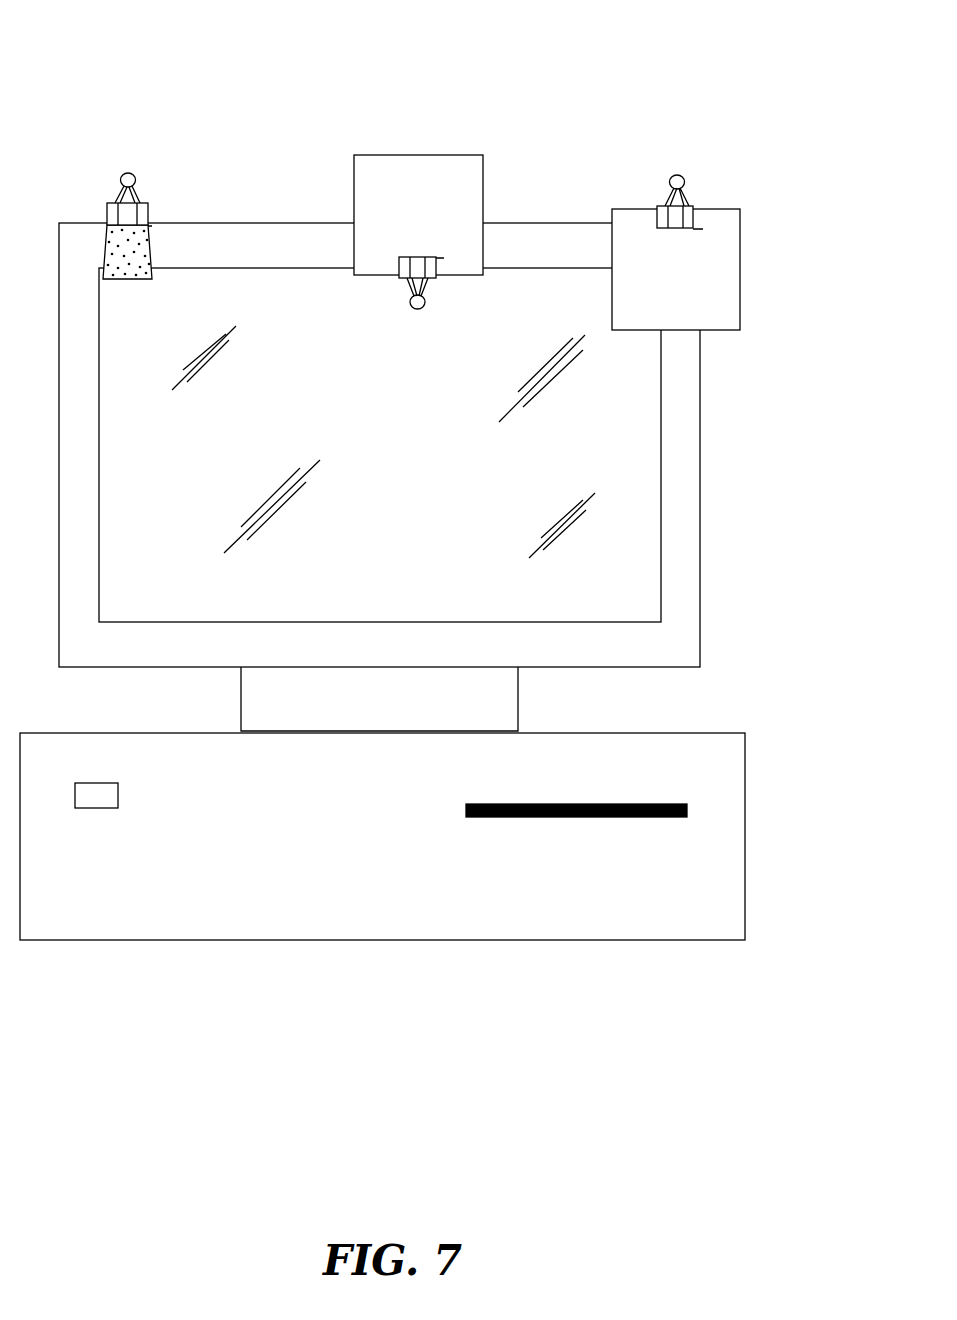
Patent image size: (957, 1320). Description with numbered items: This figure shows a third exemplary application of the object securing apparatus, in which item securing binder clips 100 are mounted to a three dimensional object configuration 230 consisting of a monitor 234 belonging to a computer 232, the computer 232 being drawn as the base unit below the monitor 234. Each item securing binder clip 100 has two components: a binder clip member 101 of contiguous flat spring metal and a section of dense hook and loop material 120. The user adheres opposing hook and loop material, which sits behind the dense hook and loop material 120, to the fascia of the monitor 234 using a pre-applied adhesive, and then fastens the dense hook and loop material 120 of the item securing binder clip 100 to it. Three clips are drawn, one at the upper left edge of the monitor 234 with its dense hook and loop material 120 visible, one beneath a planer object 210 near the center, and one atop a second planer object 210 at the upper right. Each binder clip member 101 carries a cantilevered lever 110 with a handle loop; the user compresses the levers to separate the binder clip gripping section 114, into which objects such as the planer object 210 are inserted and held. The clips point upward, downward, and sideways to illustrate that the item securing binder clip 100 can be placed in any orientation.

The item securing binder clip 100 is at (413, 241).
The binder clip member 101 is at (103, 215).
The cantilevered lever 110 is at (428, 305).
The binder clip gripping section 114 is at (155, 231).
The dense hook and loop material 120 is at (140, 270).
The planer object 210 is at (362, 193).
The three dimensional object configuration 230 is at (258, 62).
The computer 232 is at (505, 928).
The monitor 234 is at (680, 648).